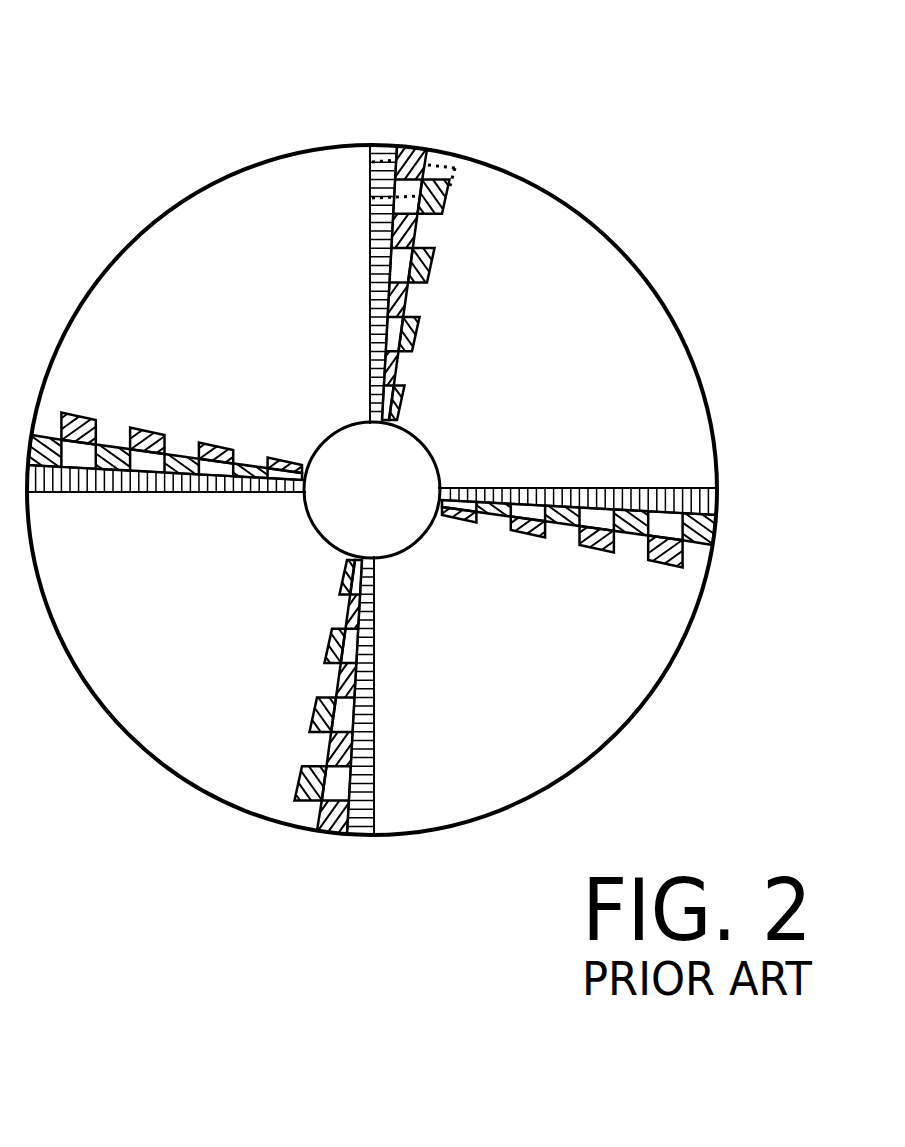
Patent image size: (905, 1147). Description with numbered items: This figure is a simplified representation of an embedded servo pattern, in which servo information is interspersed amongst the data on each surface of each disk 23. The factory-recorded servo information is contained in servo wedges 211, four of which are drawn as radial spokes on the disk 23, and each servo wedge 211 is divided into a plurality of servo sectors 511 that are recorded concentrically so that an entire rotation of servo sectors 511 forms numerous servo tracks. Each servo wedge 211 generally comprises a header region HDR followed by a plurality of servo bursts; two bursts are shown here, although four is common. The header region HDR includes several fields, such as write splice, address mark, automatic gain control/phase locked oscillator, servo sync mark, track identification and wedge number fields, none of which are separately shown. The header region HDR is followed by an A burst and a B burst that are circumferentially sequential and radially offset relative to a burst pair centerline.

The disk 23 is at (248, 168).
The servo wedge 211 is at (503, 216).
The servo sector 511 is at (370, 158).
The header region HDR is at (382, 143).
The A burst A is at (415, 144).
The B burst B is at (447, 150).